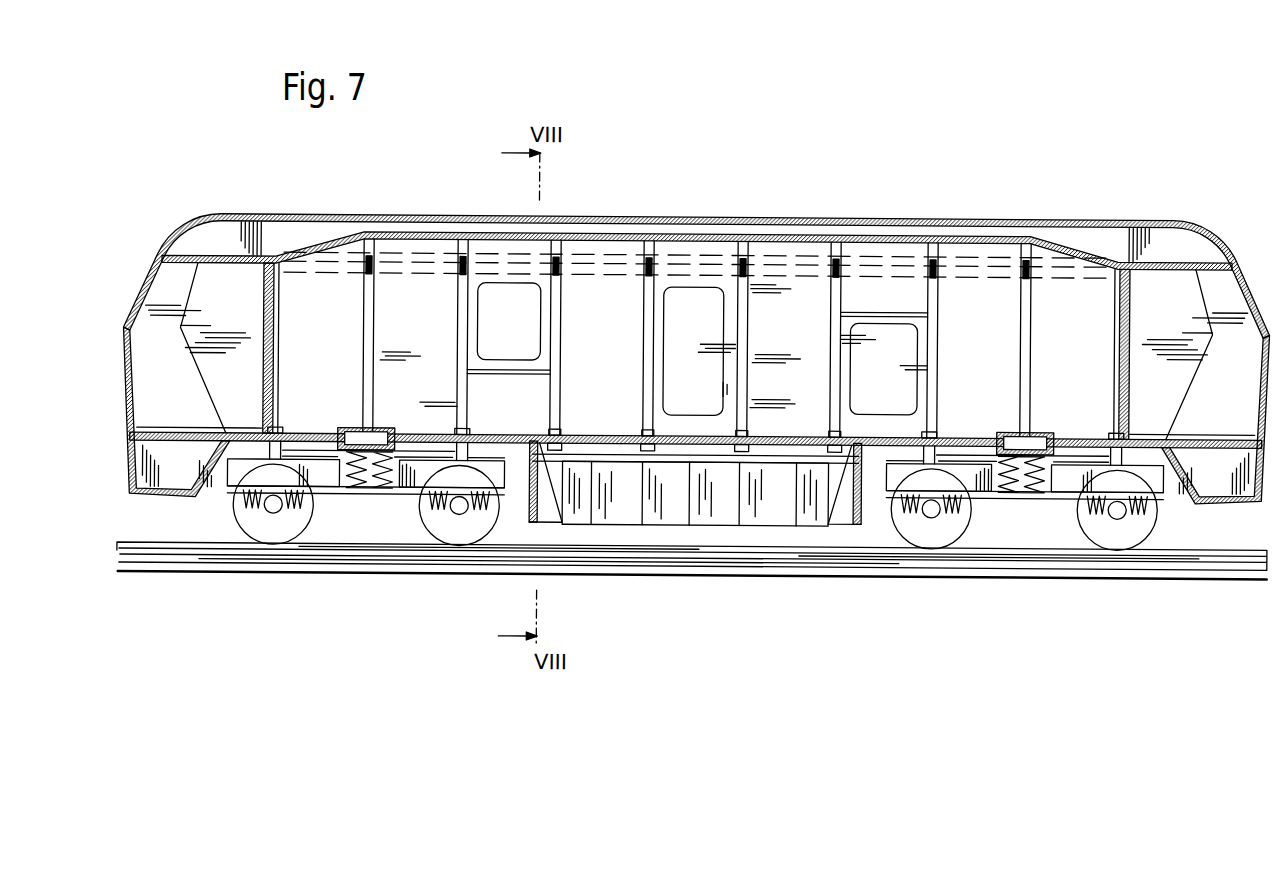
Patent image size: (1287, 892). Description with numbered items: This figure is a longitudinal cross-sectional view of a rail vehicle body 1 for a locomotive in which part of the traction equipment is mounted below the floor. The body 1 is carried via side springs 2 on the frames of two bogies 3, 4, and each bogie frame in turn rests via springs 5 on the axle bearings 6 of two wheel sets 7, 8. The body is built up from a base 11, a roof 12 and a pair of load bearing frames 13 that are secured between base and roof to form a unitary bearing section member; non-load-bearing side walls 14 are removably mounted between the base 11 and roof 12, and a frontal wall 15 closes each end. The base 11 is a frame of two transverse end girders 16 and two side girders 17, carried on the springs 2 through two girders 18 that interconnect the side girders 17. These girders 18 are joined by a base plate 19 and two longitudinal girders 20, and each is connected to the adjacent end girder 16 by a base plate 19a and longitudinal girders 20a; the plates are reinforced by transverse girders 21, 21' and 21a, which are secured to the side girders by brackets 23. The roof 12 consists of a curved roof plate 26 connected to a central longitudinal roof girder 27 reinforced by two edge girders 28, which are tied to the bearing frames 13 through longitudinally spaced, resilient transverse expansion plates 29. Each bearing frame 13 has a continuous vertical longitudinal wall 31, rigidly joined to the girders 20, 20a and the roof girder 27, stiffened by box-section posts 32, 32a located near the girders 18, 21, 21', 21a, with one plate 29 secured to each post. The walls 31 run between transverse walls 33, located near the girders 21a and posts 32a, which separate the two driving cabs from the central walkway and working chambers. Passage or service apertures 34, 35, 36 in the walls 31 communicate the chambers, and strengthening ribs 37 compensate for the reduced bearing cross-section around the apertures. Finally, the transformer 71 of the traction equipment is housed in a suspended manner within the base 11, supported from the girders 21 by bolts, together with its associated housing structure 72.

The rail vehicle body 1 is at (697, 238).
The side springs 2 is at (393, 491).
The bogie 3 is at (326, 480).
The bogie 4 is at (980, 483).
The springs 5 is at (257, 497).
The axle bearings 6 is at (262, 507).
The wheel set 7 is at (303, 521).
The wheel set 8 is at (440, 521).
The base 11 is at (522, 520).
The roof 12 is at (693, 207).
The load bearing frame 13 is at (856, 292).
The side wall 14 is at (198, 278).
The frontal wall 15 is at (157, 301).
The end girder 16 is at (163, 497).
The side girder 17 is at (358, 494).
The girder 18 is at (387, 425).
The base plate 19 is at (674, 431).
The base plate 19a is at (320, 429).
The longitudinal girder 20 is at (817, 430).
The longitudinal girder 20a is at (247, 427).
The transverse girder 21 is at (695, 419).
The transverse girder 21a is at (289, 430).
The transverse girder 21' is at (714, 425).
The bracket 23 is at (267, 451).
The roof plate 26 is at (756, 211).
The roof girder 27 is at (787, 226).
The longitudinal edge girder 28 is at (809, 254).
The transverse expansion plate 29 is at (457, 270).
The longitudinal wall 31 is at (809, 332).
The post 32 is at (457, 328).
The post 32a is at (279, 295).
The transverse wall 33 is at (263, 305).
The aperture 34 is at (724, 382).
The aperture 35 is at (498, 358).
The aperture 36 is at (908, 376).
The strengthening rib 37 is at (533, 373).
The transformer 71 is at (718, 515).
The container end wall 72 is at (838, 508).